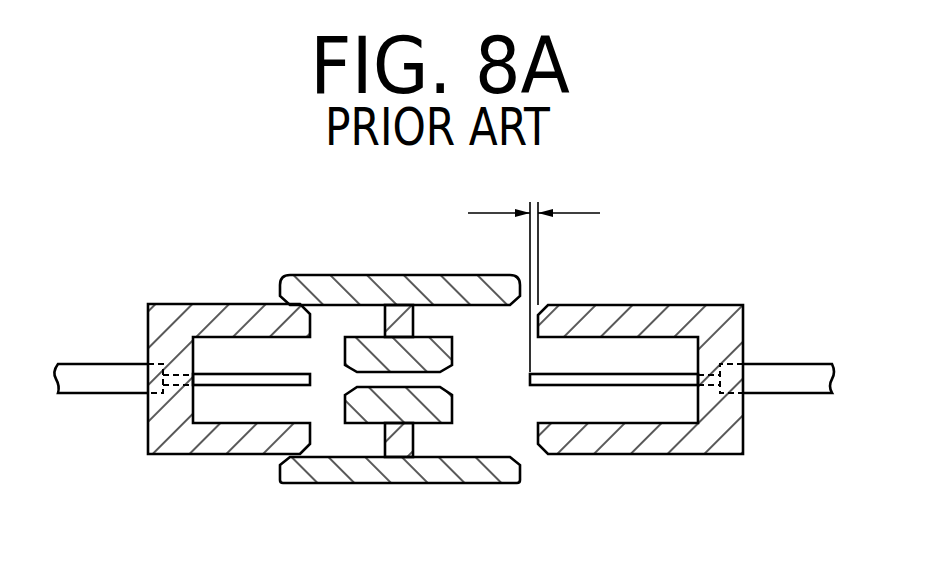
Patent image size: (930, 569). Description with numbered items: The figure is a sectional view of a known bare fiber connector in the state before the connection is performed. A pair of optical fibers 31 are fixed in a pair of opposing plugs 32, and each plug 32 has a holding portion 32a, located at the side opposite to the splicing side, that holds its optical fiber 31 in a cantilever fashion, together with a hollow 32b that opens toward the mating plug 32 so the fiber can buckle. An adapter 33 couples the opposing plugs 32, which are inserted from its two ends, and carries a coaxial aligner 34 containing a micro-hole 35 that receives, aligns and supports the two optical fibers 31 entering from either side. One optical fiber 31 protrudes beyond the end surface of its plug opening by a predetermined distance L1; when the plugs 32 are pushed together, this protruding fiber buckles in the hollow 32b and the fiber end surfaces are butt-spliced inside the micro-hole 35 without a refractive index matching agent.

The optical fiber 31 is at (262, 372).
The plug 32 is at (208, 304).
The holding portion 32a is at (172, 337).
The hollow 32b is at (225, 410).
The adapter 33 is at (388, 276).
The aligner 34 is at (417, 336).
The micro-hole 35 is at (440, 382).
The predetermined distance L1 is at (539, 273).